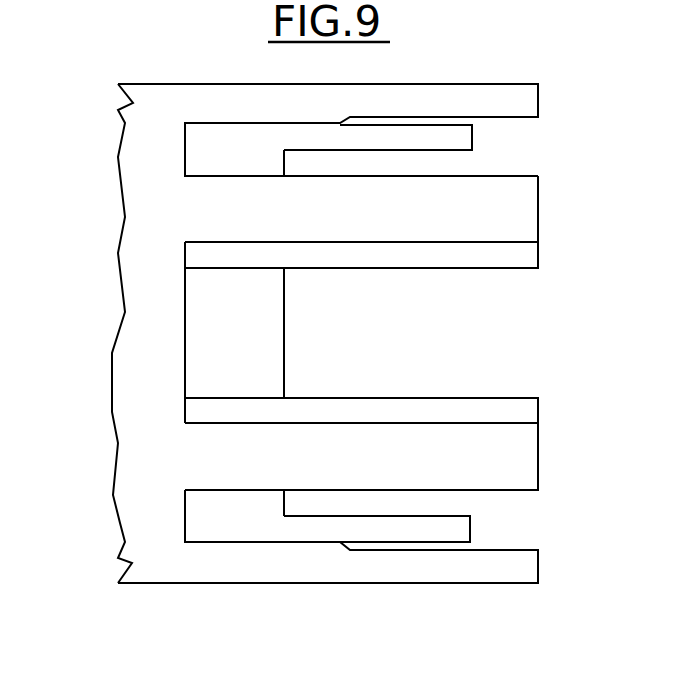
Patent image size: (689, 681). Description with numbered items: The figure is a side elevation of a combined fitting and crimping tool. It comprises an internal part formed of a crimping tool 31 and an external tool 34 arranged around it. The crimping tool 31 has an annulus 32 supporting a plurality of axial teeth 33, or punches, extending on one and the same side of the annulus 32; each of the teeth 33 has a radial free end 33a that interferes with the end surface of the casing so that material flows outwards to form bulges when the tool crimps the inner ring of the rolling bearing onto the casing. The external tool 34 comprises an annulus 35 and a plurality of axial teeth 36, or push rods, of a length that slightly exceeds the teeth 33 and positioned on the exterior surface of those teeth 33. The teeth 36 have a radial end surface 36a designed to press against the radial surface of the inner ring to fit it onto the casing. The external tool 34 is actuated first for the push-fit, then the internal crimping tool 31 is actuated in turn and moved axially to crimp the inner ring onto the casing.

The crimping tool 31 is at (473, 139).
The annulus 32 is at (221, 345).
The axial teeth 33 is at (443, 517).
The radial free end 33a is at (470, 528).
The external tool 34 is at (180, 583).
The annulus 35 is at (145, 533).
The axial teeth 36 is at (502, 100).
The radial end surface 36a is at (538, 99).